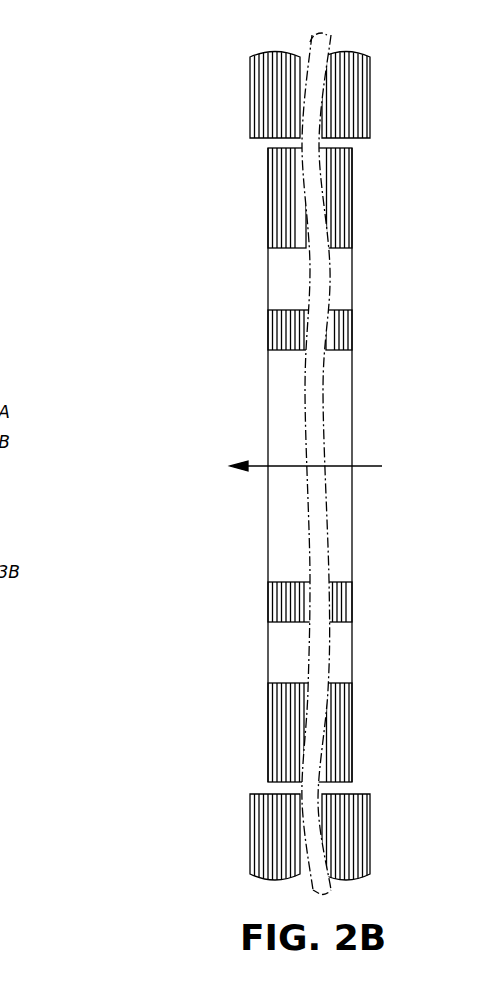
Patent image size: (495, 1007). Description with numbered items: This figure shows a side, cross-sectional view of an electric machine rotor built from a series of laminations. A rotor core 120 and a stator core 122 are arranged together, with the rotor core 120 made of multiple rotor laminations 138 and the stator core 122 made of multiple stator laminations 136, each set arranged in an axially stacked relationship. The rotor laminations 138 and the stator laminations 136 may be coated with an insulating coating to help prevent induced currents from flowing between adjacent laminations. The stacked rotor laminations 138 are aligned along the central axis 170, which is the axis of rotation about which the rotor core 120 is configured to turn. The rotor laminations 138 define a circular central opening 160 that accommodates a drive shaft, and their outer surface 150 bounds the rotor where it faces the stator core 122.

The rotor core 120 is at (316, 463).
The stator core 122 is at (305, 477).
The stator laminations 136 is at (265, 875).
The rotor laminations 138 is at (281, 163).
The outer surface 150 is at (338, 788).
The circular central opening 160 is at (290, 352).
The central axis 170 is at (367, 466).